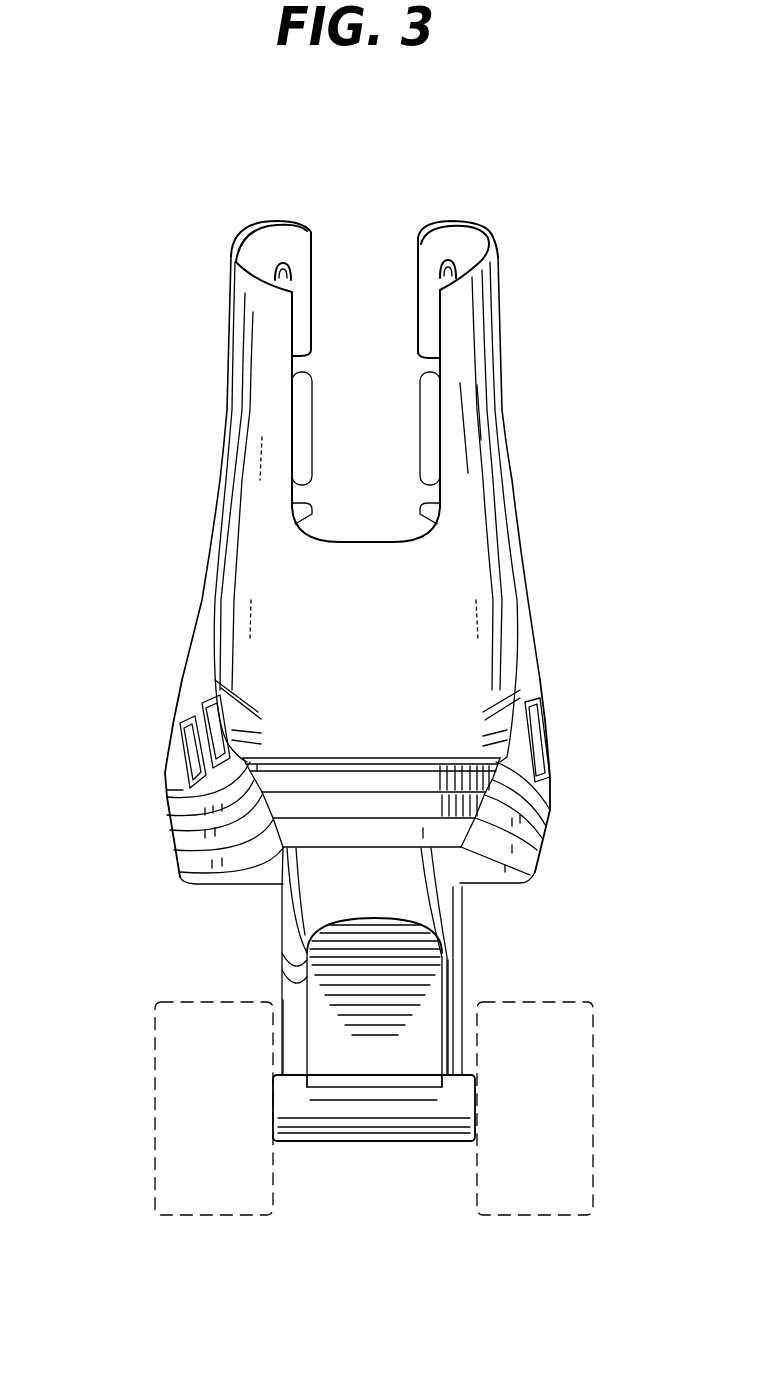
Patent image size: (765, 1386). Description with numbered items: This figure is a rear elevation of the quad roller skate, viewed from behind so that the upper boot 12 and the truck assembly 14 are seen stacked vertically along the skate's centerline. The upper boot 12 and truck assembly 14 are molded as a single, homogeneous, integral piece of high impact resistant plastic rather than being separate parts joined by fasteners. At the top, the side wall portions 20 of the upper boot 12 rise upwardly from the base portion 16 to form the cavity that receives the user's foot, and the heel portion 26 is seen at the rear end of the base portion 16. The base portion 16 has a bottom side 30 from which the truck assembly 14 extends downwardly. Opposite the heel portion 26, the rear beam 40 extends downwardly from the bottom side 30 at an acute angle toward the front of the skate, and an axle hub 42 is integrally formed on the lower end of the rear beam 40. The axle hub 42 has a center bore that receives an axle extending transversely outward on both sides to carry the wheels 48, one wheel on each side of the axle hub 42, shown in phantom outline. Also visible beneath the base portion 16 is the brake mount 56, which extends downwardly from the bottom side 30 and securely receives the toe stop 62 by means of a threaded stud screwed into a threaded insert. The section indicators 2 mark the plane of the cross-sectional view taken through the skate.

The section line 2- 2 is at (368, 313).
The upper boot 12 is at (492, 423).
The side wall portions 20 is at (518, 531).
The heel portion 26 is at (520, 663).
The base portion 16 is at (540, 840).
The truck assembly 14 is at (283, 888).
The bottom side 30 is at (524, 878).
The brake mount 56 is at (281, 933).
The rear beam 40 is at (282, 1027).
The toe stop 62 is at (462, 994).
The axle hub 42 is at (315, 1143).
The wheels 48 is at (155, 1200).